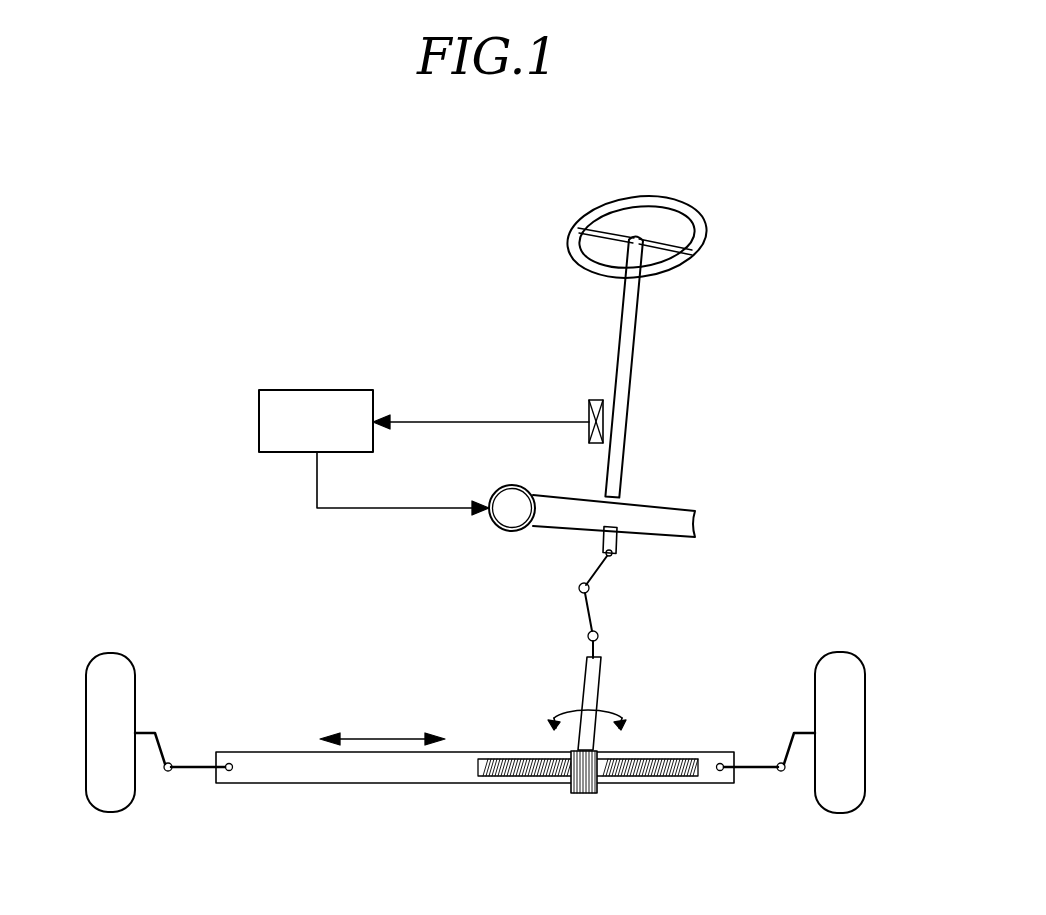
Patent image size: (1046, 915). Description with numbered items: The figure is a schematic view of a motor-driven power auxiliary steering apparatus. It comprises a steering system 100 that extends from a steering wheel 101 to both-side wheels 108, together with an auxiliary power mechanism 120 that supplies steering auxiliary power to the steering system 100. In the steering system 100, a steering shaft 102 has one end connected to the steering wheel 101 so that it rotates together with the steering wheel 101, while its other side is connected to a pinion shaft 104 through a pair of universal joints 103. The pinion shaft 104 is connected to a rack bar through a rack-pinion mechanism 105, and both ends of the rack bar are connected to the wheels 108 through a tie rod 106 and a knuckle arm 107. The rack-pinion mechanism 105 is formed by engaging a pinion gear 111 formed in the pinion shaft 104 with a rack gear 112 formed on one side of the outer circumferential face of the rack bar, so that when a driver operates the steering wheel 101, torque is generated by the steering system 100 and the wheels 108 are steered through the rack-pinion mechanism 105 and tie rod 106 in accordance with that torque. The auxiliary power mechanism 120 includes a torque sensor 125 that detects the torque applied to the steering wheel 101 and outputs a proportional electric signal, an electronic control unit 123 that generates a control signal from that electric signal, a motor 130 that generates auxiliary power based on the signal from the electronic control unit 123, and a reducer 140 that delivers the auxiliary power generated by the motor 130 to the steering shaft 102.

The steering system 100 is at (409, 223).
The steering wheel 101 is at (570, 212).
The steering shaft 102 is at (636, 352).
The universal joints 103 is at (602, 570).
The pinion shaft 104 is at (585, 690).
The rack-pinion mechanism 105 is at (475, 819).
The tie rod 106 is at (760, 765).
The knuckle arm 107 is at (150, 731).
The wheels 108 is at (851, 660).
The pinion gear 111 is at (583, 795).
The rack gear 112 is at (627, 782).
The auxiliary power mechanism 120 is at (276, 370).
The electronic control unit 123 is at (355, 390).
The torque sensor 125 is at (590, 412).
The motor 130 is at (515, 520).
The reducer 140 is at (628, 500).